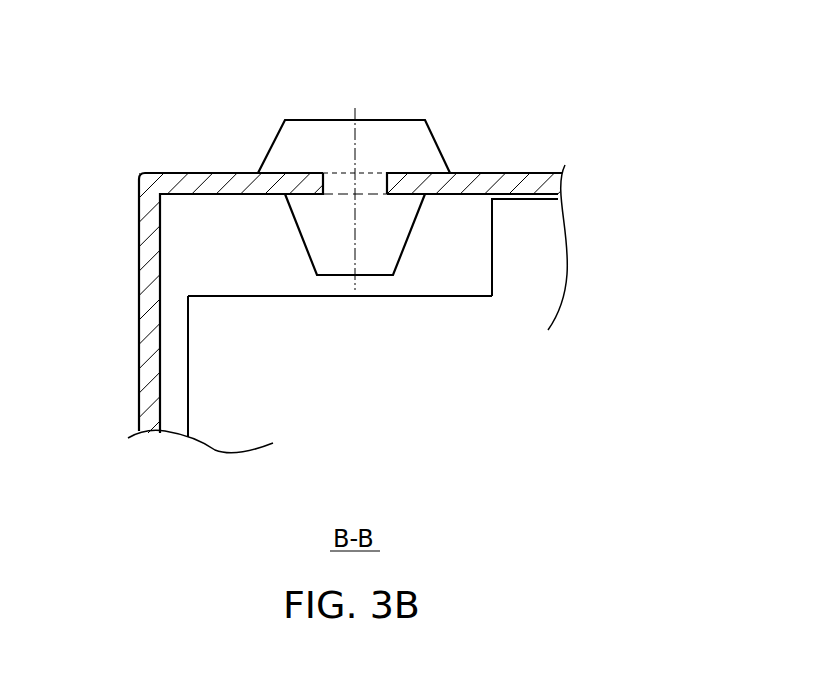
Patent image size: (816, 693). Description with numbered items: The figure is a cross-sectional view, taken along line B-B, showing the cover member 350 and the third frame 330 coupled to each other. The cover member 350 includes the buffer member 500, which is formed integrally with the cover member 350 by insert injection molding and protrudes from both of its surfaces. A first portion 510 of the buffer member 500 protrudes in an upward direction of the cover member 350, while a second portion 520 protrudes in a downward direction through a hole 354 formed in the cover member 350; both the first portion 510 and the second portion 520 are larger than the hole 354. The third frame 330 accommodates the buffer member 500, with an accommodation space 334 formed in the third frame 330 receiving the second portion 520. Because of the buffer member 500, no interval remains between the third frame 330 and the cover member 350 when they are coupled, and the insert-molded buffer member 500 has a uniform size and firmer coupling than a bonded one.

The third frame 330 is at (205, 360).
The accommodation space 334 is at (402, 295).
The cover member 350 is at (196, 182).
The hole 354 is at (338, 185).
The buffer member 500 is at (660, 47).
The first portion 510 is at (418, 150).
The second portion 520 is at (382, 233).